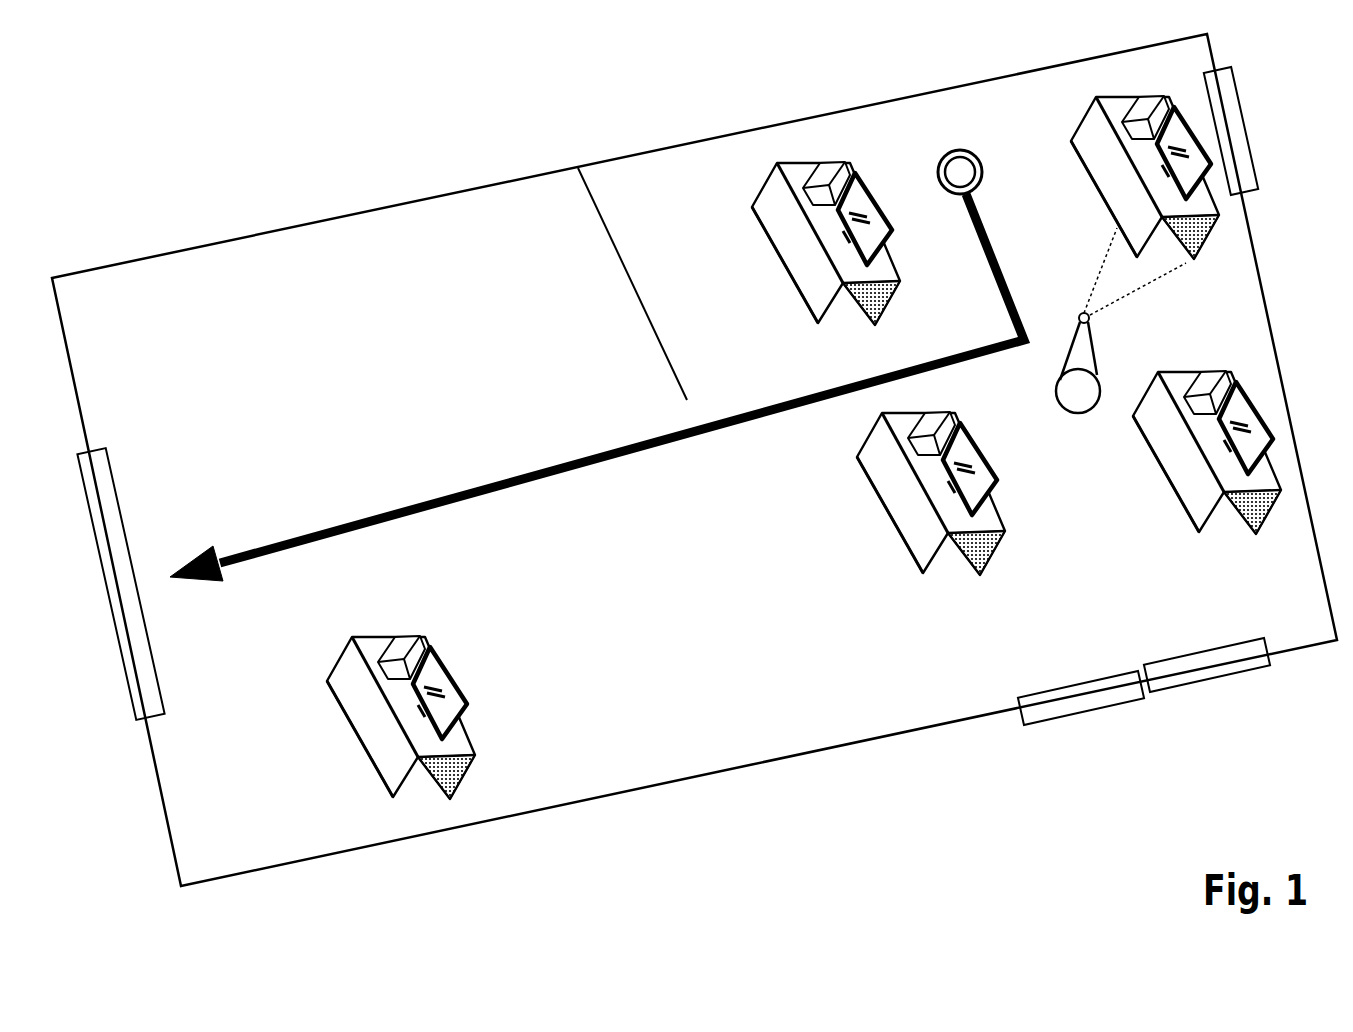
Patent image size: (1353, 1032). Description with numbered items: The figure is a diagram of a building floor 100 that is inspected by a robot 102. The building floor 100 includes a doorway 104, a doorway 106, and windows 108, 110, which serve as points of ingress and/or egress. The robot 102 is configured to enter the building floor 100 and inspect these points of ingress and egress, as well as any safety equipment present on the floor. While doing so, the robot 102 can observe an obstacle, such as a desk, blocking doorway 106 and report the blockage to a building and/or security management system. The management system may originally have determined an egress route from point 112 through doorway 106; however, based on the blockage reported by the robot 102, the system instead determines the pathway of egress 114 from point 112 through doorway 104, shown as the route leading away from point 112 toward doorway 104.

The building floor 100 is at (743, 768).
The robot 102 is at (1091, 343).
The doorway 104 is at (118, 488).
The doorway 106 is at (1245, 127).
The window 108 is at (1085, 712).
The window 110 is at (1227, 677).
The point 112 is at (950, 152).
The pathway of egress 114 is at (393, 520).